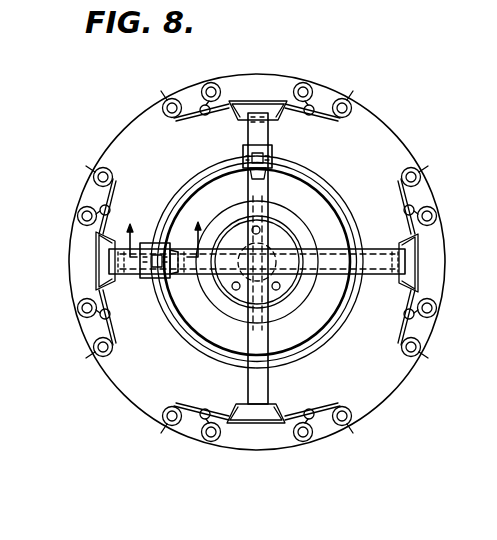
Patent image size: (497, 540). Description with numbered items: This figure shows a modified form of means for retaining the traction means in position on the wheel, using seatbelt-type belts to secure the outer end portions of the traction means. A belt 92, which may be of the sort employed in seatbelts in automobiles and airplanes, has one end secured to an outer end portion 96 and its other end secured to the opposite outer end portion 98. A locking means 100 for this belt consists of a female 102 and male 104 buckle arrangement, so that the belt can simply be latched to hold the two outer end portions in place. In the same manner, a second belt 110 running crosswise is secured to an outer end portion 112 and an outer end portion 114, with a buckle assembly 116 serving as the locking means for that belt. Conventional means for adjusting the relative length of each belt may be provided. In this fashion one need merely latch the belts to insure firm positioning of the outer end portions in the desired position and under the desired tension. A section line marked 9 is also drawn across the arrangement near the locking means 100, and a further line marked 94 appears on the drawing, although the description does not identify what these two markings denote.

The section line 9- 9 is at (165, 226).
The belt 92 is at (378, 276).
The vertical cross arm 94 is at (268, 385).
The outer end portion 96 is at (404, 243).
The outer end portion 98 is at (96, 264).
The locking means 100 is at (148, 242).
The female buckle 102 is at (147, 279).
The male buckle 104 is at (178, 273).
The belt 110 is at (272, 140).
The outer end portion 112 is at (259, 112).
The outer end portion 114 is at (259, 405).
The buckle assembly 116 is at (242, 150).